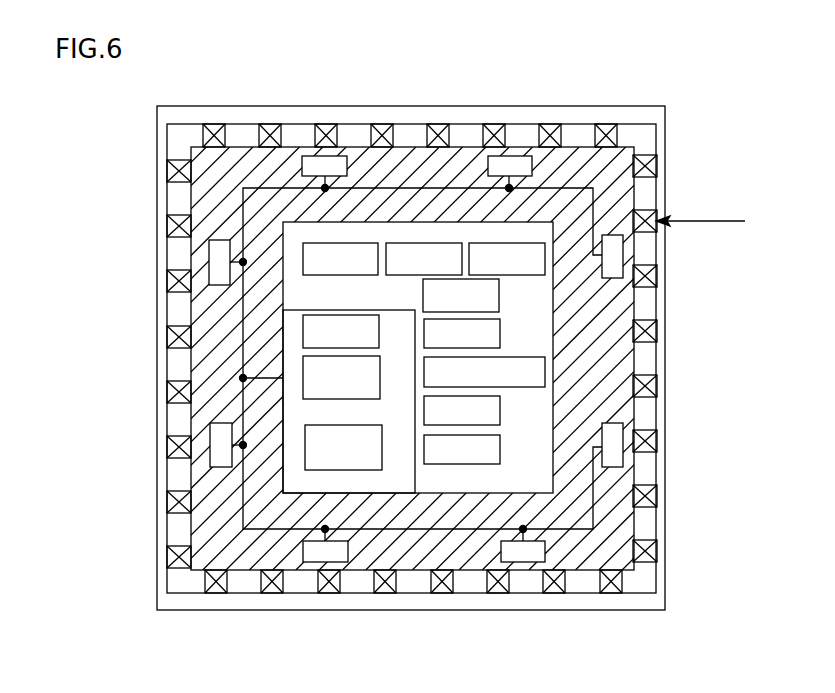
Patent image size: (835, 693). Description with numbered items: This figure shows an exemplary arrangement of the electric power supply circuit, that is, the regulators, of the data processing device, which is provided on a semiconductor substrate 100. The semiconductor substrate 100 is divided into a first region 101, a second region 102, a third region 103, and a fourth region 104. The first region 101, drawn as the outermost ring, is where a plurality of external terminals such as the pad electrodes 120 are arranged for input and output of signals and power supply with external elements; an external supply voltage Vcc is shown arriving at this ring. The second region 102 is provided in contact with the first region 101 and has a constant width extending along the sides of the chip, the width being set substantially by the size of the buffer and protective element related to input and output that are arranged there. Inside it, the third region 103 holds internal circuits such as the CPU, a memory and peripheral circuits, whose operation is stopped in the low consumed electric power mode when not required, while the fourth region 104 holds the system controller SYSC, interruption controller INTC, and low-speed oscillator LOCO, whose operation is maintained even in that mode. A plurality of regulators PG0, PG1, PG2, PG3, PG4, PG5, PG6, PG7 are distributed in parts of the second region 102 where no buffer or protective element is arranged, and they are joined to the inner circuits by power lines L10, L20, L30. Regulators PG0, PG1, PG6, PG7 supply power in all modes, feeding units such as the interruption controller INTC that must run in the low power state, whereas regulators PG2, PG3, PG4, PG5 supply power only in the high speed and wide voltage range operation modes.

The semiconductor substrate 100 is at (210, 106).
The first region 101 is at (643, 188).
The second region 102 is at (417, 314).
The third region 103 is at (325, 357).
The fourth region 104 is at (290, 349).
The pad electrodes 120 is at (570, 135).
The first power supply line L10 is at (471, 186).
The second power supply line (Vdd) L20 is at (416, 510).
The third power supply line L30 is at (273, 415).
The regulator PG0 is at (210, 432).
The regulator PG1 is at (209, 246).
The regulator PG2 is at (350, 156).
The regulator PG3 is at (525, 156).
The regulator PG4 is at (623, 242).
The regulator PG5 is at (623, 462).
The regulator PG6 is at (527, 562).
The regulator PG7 is at (298, 562).
The external power supply Vcc is at (723, 221).